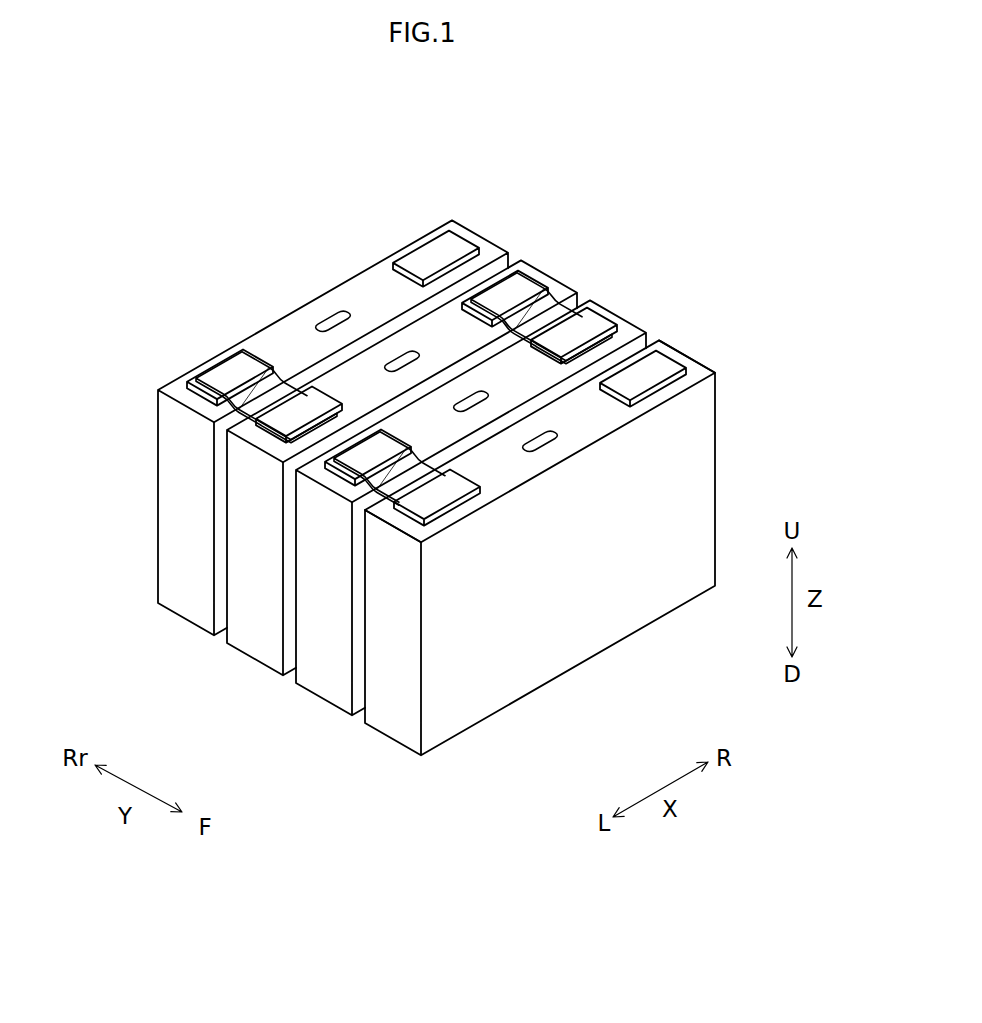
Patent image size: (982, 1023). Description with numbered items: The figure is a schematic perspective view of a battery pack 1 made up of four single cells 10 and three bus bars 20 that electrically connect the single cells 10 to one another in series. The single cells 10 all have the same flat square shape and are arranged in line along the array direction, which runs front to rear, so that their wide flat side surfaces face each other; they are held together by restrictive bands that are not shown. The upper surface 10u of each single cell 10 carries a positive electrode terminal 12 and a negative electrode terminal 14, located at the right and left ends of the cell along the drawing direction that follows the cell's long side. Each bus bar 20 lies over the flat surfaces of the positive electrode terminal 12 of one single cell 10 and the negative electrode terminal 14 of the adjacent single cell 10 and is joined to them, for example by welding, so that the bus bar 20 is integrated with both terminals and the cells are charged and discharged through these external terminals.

The battery pack 1 is at (744, 196).
The single cell 10 is at (142, 621).
The upper surface 10u is at (580, 425).
The positive electrode terminal 12 is at (438, 247).
The negative electrode terminal 14 is at (524, 275).
The bus bar 20 is at (552, 302).